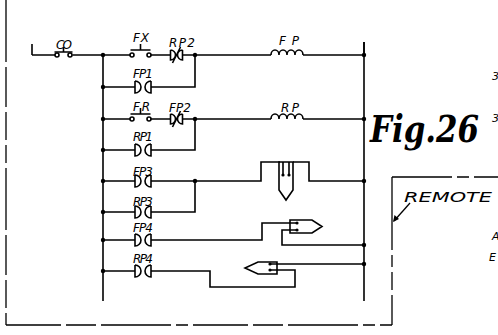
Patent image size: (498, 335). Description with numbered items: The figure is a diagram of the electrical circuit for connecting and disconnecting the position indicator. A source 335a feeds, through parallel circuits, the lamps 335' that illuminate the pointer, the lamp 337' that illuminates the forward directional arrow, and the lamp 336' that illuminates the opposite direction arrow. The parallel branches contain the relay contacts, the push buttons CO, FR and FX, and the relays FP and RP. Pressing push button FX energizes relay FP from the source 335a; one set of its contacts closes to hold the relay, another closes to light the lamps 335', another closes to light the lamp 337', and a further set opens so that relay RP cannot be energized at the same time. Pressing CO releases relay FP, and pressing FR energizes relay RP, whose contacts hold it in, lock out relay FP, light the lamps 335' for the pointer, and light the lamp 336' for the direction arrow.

The source 335a is at (198, 30).
The lamps 335' is at (270, 182).
The lamp 336' is at (248, 260).
The lamp 337' is at (319, 217).